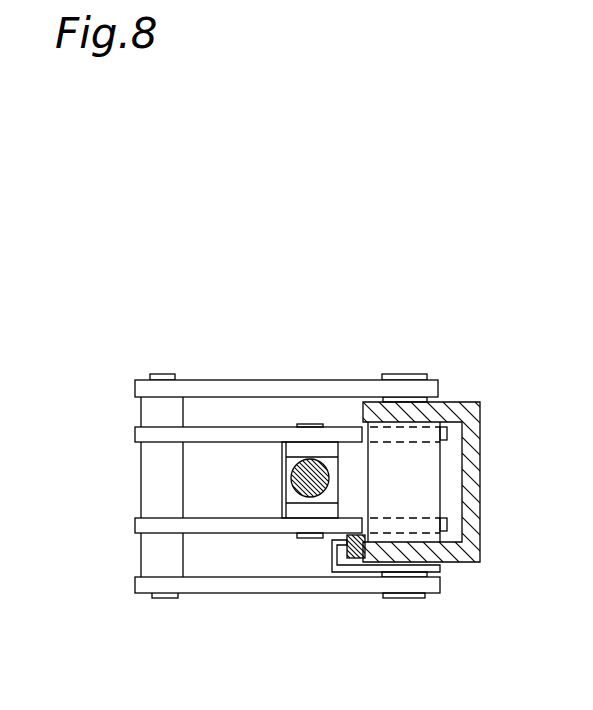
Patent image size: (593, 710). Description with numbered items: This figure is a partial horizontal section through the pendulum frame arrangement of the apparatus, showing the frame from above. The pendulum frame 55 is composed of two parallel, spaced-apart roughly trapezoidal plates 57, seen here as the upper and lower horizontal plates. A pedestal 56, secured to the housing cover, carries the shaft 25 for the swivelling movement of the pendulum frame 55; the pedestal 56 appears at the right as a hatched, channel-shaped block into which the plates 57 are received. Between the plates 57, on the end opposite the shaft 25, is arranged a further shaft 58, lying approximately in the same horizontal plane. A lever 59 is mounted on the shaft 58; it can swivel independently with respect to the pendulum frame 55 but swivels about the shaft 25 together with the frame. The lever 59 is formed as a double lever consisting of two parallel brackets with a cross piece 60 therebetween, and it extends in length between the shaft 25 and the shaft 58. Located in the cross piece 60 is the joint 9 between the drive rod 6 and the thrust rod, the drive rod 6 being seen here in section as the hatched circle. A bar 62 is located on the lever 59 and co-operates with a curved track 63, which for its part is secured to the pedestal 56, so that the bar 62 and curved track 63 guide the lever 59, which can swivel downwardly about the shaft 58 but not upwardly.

The trapezoidal plates 57 is at (198, 380).
The pendulum frame 55 is at (247, 366).
The joint 9 is at (303, 424).
The drive rod 6 is at (313, 468).
The pedestal 56 is at (465, 445).
The lever 59 is at (145, 435).
The shaft 58 is at (162, 558).
The cross piece 60 is at (295, 512).
The curved track 63 is at (338, 556).
The bar 62 is at (360, 558).
The shaft 25 is at (408, 598).